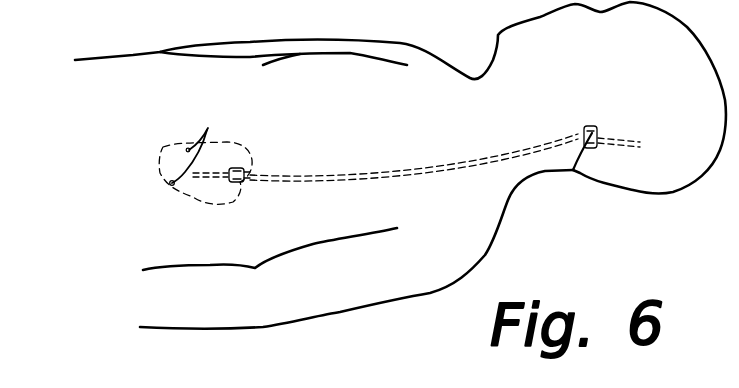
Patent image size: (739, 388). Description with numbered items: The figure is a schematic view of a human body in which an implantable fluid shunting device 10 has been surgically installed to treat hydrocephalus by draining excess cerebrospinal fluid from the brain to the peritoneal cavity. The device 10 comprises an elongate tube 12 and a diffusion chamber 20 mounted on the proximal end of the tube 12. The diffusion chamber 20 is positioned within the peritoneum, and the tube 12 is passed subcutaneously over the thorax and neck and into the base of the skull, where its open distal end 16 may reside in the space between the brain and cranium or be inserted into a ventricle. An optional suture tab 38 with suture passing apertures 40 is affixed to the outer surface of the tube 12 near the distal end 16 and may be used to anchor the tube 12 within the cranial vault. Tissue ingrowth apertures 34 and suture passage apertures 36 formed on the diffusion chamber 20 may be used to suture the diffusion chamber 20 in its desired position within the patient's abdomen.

The implantable fluid shunting device 10 is at (392, 155).
The elongate tube 12 is at (420, 174).
The open distal end 16 is at (640, 144).
The diffusion chamber 20 is at (197, 197).
The tissue ingrowth apertures 34 is at (207, 132).
The suture passage apertures 36 is at (248, 177).
The suture tab 38 is at (573, 172).
The suture passing apertures 40 is at (593, 134).